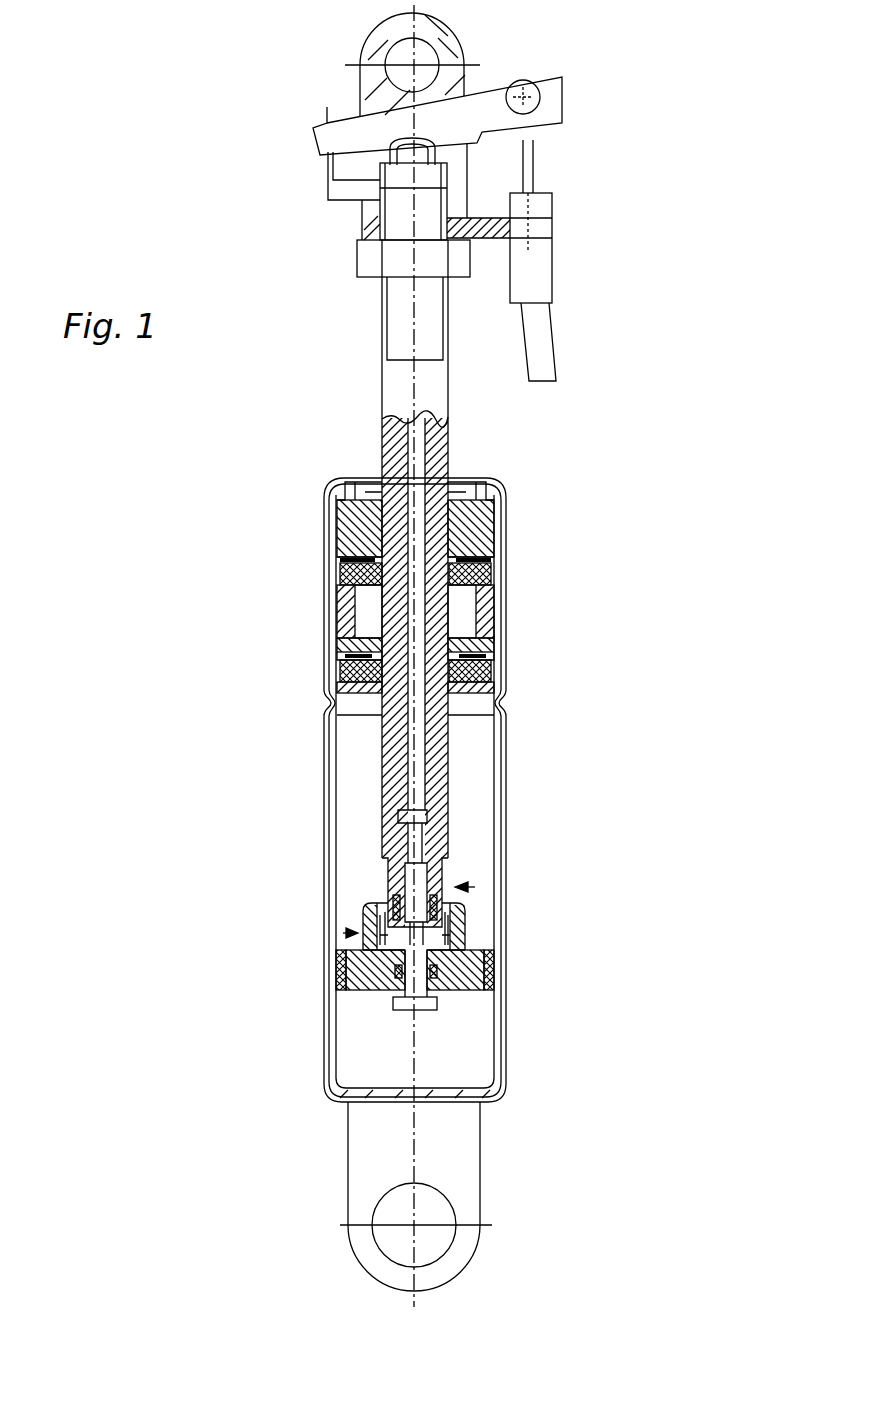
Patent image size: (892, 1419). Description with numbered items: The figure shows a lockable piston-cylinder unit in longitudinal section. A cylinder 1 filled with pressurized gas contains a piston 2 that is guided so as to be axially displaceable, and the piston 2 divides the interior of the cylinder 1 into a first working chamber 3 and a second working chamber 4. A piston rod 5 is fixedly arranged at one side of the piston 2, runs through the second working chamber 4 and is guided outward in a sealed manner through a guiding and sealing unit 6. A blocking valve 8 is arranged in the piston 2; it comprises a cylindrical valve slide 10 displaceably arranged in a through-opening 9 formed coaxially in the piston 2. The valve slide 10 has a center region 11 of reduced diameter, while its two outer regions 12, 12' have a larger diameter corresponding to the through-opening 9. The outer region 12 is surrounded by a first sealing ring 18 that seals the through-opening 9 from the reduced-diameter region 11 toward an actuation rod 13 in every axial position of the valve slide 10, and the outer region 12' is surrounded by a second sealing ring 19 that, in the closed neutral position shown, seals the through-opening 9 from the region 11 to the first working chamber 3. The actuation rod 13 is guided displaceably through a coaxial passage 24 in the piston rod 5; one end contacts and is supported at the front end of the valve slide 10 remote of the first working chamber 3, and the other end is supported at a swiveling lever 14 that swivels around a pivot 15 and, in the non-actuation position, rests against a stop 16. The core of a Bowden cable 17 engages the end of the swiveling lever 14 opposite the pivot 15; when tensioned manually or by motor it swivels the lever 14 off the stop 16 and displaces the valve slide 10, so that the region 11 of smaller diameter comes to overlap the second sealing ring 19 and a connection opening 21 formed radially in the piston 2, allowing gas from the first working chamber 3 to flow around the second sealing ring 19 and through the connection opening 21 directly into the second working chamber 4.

The cylinder 1 is at (504, 722).
The piston 2 is at (493, 980).
The first working chamber 3 is at (470, 1047).
The second working chamber 4 is at (474, 770).
The piston rod 5 is at (317, 697).
The guiding and sealing unit 6 is at (488, 522).
The blocking valve 8 is at (330, 933).
The through-opening 9 is at (337, 983).
The valve slide 10 is at (478, 887).
The center region 11 is at (472, 925).
The outer region 12 is at (302, 868).
The outer region 12' is at (275, 1061).
The actuation rod 13 is at (398, 605).
The swiveling lever 14 is at (482, 130).
The pivot 15 is at (323, 127).
The stop 16 is at (443, 108).
The Bowden cable 17 is at (549, 316).
The first sealing ring 18 is at (390, 908).
The second sealing ring 19 is at (508, 962).
The connection opening 21 is at (472, 935).
The coaxial passage 24 is at (390, 452).